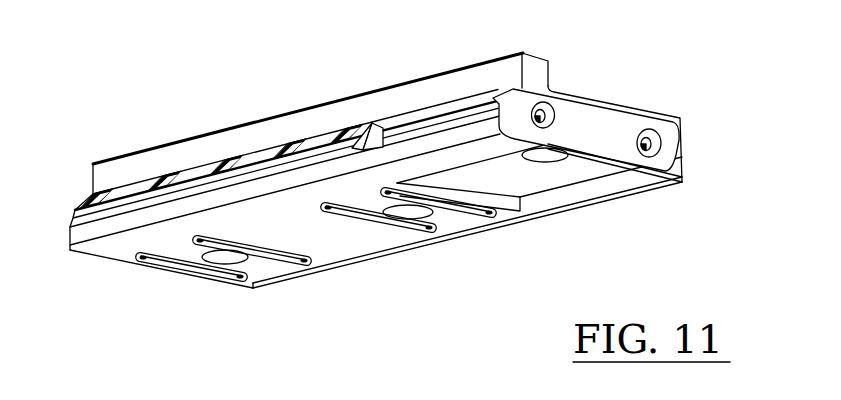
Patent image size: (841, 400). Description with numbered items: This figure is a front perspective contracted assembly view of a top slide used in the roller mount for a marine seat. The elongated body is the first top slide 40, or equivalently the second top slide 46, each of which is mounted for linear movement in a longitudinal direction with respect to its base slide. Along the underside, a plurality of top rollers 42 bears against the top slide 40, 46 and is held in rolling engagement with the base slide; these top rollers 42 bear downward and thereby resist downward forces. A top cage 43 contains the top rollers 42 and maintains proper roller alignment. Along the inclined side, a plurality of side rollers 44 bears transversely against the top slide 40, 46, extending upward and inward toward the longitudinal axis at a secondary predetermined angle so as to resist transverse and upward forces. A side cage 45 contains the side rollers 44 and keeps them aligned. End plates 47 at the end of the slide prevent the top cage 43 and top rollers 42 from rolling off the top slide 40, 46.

The first top slide 40 is at (335, 108).
The second top slide 46 is at (285, 134).
The side rollers 44 is at (223, 160).
The side cage 45 is at (130, 193).
The end plates 47 is at (605, 125).
The top rollers 42 is at (350, 243).
The top cage 43 is at (267, 273).